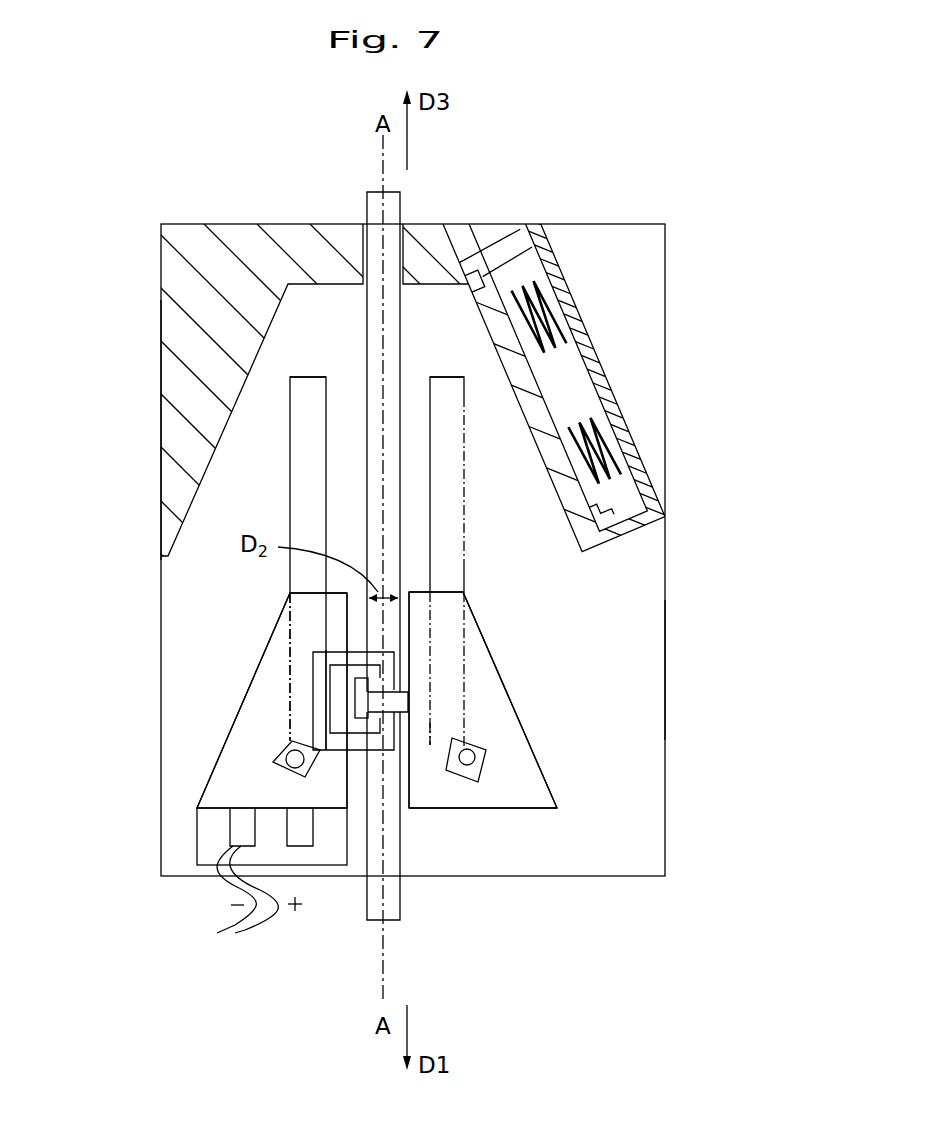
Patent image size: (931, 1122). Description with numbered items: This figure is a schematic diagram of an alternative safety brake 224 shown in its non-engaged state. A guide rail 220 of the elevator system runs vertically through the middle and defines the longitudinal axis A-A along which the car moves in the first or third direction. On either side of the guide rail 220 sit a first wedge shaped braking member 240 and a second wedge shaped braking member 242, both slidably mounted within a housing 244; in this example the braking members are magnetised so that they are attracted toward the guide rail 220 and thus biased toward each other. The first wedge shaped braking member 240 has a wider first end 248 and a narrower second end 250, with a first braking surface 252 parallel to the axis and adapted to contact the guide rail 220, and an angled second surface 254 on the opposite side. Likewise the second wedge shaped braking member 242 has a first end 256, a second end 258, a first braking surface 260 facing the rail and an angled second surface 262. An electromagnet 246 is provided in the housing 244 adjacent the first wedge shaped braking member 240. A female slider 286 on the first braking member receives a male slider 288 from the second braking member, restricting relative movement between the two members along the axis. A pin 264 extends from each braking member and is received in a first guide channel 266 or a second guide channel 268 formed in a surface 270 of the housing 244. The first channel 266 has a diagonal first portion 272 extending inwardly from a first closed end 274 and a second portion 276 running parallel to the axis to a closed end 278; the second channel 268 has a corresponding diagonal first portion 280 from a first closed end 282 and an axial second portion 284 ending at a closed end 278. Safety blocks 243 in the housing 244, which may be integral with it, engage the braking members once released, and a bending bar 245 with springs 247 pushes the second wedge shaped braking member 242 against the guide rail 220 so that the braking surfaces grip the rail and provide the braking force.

The guide rail 220 is at (380, 921).
The safety brake 224 is at (716, 776).
The first wedge shaped braking member 240 is at (252, 703).
The second wedge shaped braking member 242 is at (512, 727).
The safety blocks 243 is at (178, 323).
The housing 244 is at (163, 428).
The bending bar 245 is at (505, 268).
The electromagnet 246 is at (195, 850).
The springs 247 is at (605, 438).
The first end 248 is at (196, 808).
The second end 250 is at (290, 593).
The first braking surface 252 is at (347, 792).
The second surface 254 is at (250, 670).
The first end 256 is at (472, 810).
The second end 258 is at (465, 590).
The first braking surface 260 is at (410, 628).
The second surface 262 is at (513, 693).
The pin 264 is at (273, 750).
The first guide channel 266 is at (297, 515).
The second guide channel 268 is at (448, 493).
The surface of the housing 270 is at (645, 666).
The first portion 272 is at (300, 737).
The first closed end 274 is at (286, 760).
The second portion 276 is at (303, 627).
The closed end 278 is at (316, 377).
The first portion 280 is at (460, 737).
The first closed end 282 is at (468, 765).
The second portion 284 is at (455, 553).
The female slider 286 is at (357, 750).
The male slider 288 is at (407, 705).